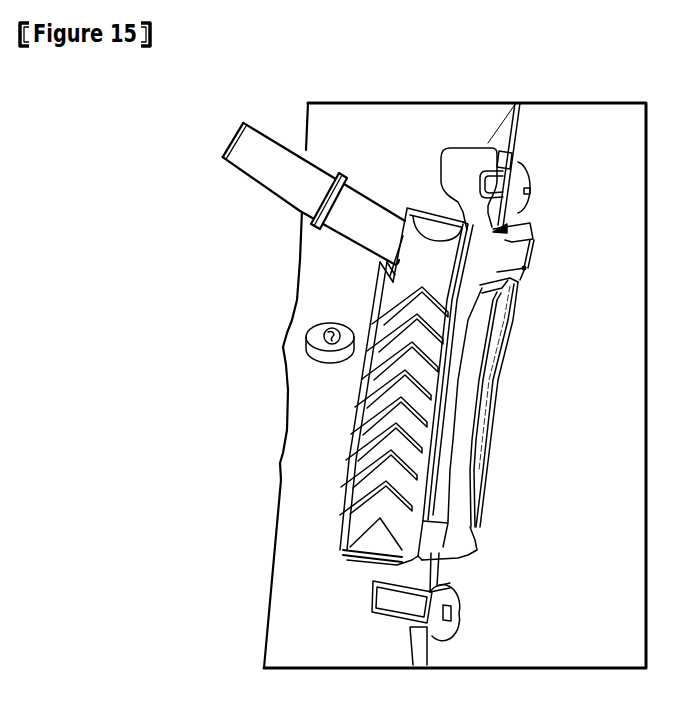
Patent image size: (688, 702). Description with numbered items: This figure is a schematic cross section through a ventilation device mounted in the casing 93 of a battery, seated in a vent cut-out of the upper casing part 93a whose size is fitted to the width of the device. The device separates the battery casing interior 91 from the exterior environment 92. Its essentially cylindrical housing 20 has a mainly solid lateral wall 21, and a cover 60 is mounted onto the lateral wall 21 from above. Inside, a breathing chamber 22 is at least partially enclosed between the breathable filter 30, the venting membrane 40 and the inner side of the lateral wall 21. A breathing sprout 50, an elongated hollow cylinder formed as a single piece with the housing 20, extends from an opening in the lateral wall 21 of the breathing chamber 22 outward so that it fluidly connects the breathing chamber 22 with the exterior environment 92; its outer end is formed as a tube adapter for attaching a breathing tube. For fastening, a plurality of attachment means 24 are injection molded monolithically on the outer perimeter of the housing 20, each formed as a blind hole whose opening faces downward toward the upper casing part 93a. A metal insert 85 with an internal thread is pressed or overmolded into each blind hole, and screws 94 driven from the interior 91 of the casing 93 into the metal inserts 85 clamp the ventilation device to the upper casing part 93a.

The housing 20 is at (530, 241).
The lateral wall 21 is at (523, 270).
The breathing chamber 22 is at (468, 376).
The attachment means 24 is at (462, 178).
The breathable filter 30 is at (510, 325).
The venting membrane 40 is at (425, 481).
The breathing sprout 50 is at (220, 152).
The cover 60 is at (363, 560).
The metal insert 85 is at (403, 625).
The battery casing interior 91 is at (576, 466).
The exterior environment 92 is at (163, 436).
The battery casing 93 is at (443, 570).
The upper casing part 93a is at (510, 137).
The screw 94 is at (523, 155).